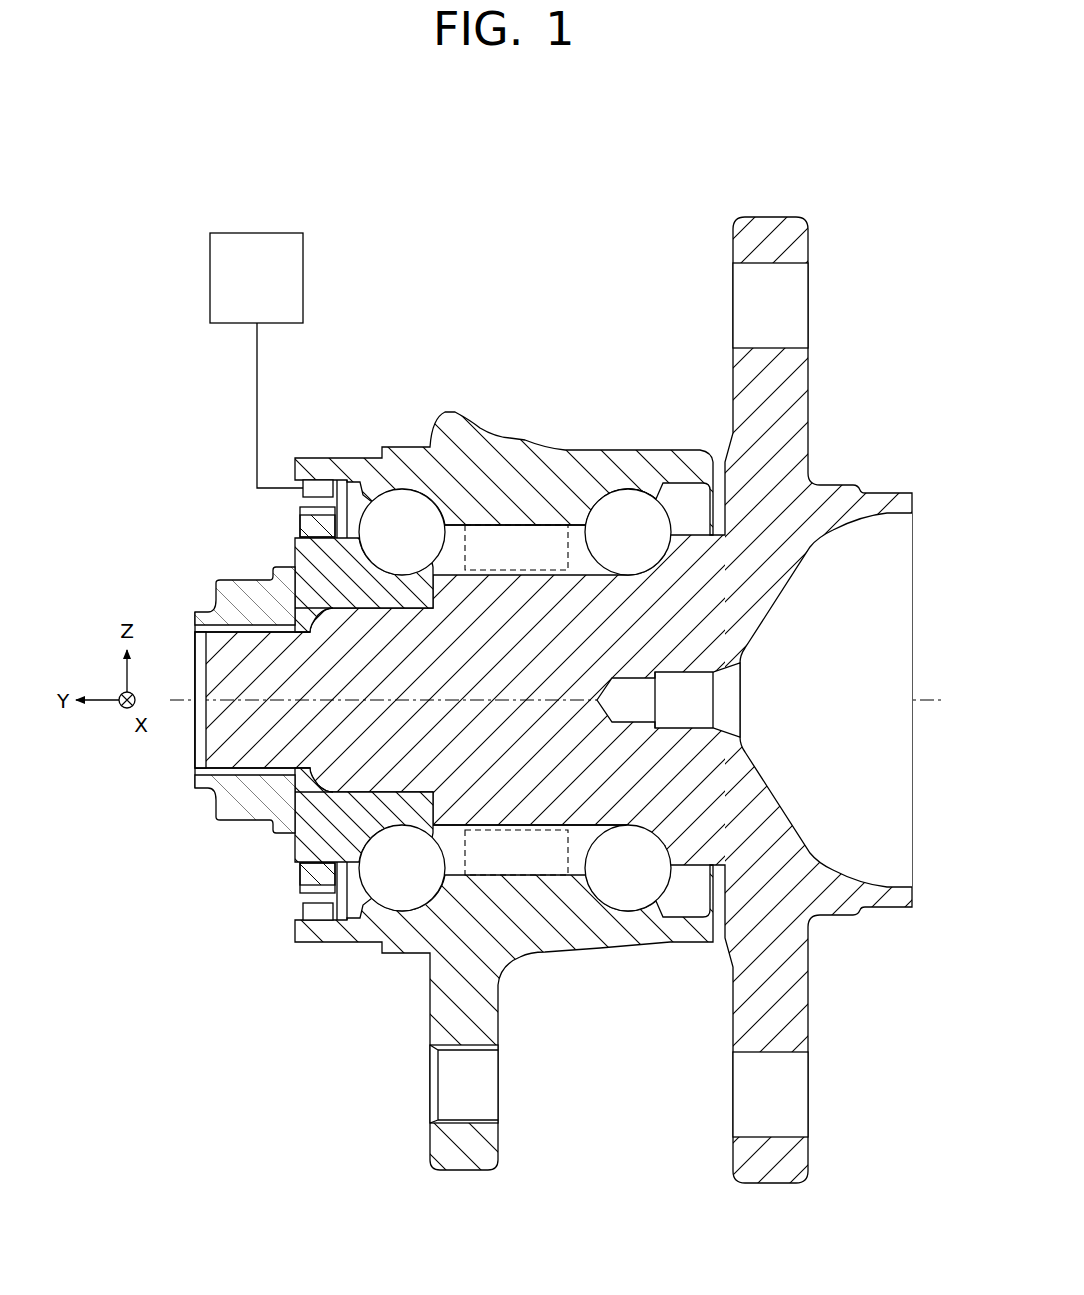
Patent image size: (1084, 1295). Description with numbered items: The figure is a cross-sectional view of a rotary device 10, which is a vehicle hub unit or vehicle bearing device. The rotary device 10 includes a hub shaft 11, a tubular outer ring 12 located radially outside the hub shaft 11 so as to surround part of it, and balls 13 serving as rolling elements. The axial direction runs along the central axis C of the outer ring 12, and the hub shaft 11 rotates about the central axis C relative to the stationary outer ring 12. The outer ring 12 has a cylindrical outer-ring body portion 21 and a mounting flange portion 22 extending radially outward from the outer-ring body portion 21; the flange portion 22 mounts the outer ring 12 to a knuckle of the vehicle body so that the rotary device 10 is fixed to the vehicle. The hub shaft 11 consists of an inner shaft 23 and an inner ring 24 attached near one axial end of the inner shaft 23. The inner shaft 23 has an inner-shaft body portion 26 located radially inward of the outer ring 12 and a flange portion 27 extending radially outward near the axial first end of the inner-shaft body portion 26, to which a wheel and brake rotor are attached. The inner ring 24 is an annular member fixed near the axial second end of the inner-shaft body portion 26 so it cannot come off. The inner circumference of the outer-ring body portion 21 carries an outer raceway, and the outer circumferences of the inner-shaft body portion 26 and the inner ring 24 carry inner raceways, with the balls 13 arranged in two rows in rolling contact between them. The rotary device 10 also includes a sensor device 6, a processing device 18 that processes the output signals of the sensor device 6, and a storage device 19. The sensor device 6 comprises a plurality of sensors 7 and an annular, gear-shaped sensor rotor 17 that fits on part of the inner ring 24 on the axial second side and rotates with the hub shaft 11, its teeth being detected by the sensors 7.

The sensor device 6 is at (268, 541).
The sensors 7 is at (317, 490).
The rotary device 10 is at (462, 348).
The hub shaft 11 is at (882, 492).
The outer ring 12 is at (535, 440).
The balls 13 is at (402, 525).
The sensor rotor 17 is at (300, 522).
The processing device 18 is at (258, 233).
The storage device 19 is at (282, 270).
The outer-ring body portion 21 is at (502, 470).
The mounting flange portion 22 is at (500, 1027).
The inner shaft 23 is at (580, 827).
The inner ring 24 is at (348, 575).
The inner-shaft body portion 26 is at (583, 768).
The flange portion 27 is at (808, 377).
The central axis C is at (848, 700).